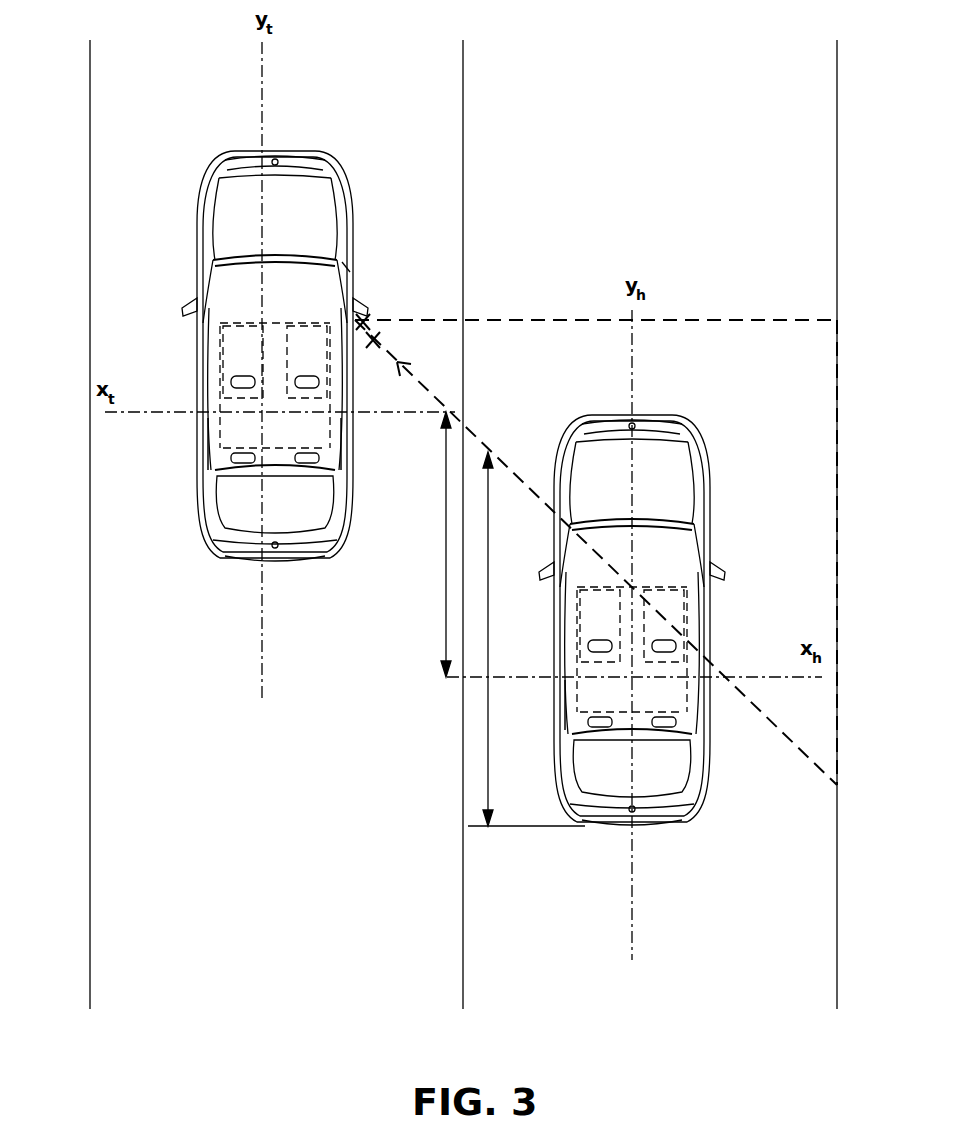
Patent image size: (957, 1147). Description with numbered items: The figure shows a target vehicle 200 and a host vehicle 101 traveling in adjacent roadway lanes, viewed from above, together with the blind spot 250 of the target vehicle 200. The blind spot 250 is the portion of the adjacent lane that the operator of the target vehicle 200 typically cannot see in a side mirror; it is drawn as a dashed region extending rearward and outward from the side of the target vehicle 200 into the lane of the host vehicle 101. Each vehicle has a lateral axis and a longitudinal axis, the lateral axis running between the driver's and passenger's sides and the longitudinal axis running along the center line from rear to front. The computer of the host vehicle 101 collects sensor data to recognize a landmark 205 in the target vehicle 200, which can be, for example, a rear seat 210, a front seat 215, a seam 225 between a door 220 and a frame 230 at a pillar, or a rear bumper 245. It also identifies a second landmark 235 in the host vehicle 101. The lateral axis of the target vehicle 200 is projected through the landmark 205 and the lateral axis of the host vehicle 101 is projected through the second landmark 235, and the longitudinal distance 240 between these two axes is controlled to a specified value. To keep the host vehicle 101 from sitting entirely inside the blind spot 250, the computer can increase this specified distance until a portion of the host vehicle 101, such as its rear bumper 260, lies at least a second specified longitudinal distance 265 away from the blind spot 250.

The target vehicle 200 is at (330, 148).
The host vehicle 101 is at (680, 413).
The blind spot 250 is at (740, 320).
The frame 230 is at (345, 268).
The front seat 215 is at (363, 322).
The seam 225 is at (372, 345).
The door 220 is at (356, 378).
The rear seat 210 is at (212, 425).
The landmark 205 is at (333, 428).
The rear bumper 245 is at (300, 562).
The second landmark 235 is at (575, 690).
The rear bumper 260 is at (660, 828).
The longitudinal distance 240 is at (446, 600).
The second specified longitudinal distance 265 is at (488, 766).